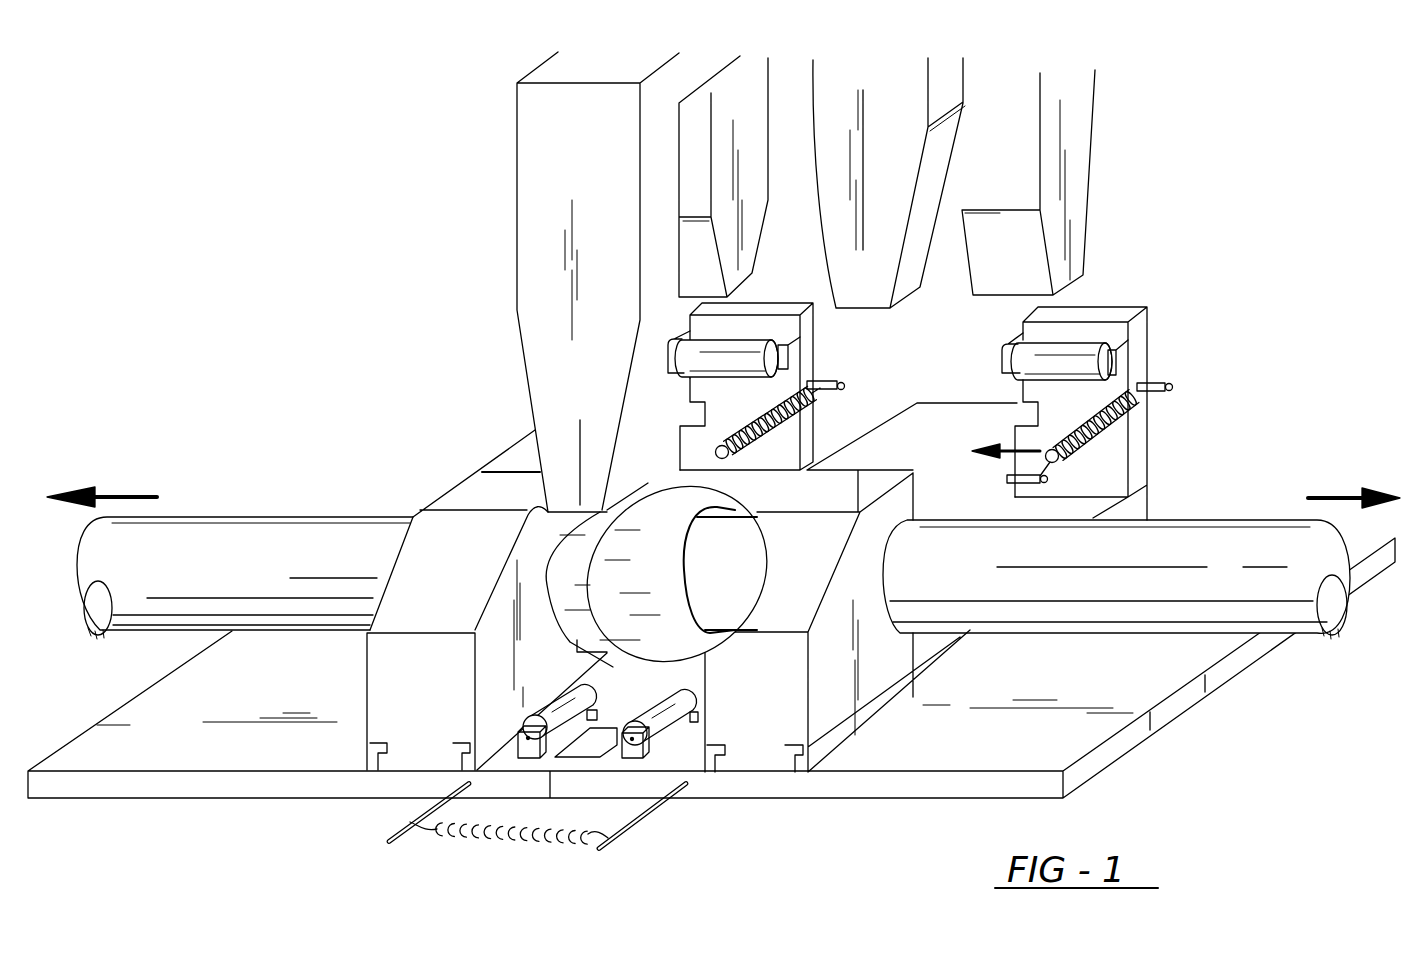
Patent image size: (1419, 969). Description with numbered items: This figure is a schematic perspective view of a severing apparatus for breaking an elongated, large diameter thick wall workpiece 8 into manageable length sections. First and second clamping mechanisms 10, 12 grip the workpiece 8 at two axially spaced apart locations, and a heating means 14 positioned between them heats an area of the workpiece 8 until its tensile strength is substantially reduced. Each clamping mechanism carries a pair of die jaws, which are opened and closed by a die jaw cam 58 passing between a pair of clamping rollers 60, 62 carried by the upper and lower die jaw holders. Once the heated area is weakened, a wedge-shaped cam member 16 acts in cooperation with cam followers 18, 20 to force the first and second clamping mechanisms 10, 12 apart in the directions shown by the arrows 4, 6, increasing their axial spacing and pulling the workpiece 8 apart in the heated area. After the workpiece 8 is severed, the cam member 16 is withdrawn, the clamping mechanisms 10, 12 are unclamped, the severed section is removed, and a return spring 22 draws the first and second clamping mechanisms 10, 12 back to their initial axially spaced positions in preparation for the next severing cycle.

The arrow 4 is at (1352, 490).
The arrow 6 is at (133, 490).
The workpiece 8 is at (1210, 545).
The first clamping mechanism 10 is at (1040, 451).
The second clamping mechanism 12 is at (505, 440).
The heating means 14 is at (642, 567).
The cam member 16 is at (547, 270).
The cam follower 18 is at (530, 725).
The cam follower 20 is at (673, 728).
The return spring 22 is at (513, 840).
The die jaw cam 58 is at (747, 190).
The clamping roller 60 is at (692, 397).
The clamping roller 62 is at (767, 340).